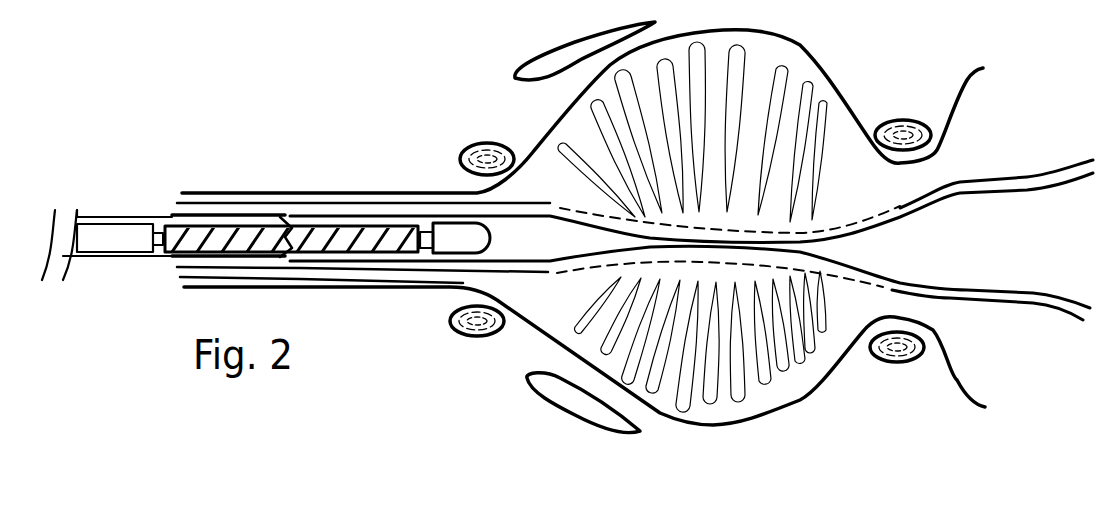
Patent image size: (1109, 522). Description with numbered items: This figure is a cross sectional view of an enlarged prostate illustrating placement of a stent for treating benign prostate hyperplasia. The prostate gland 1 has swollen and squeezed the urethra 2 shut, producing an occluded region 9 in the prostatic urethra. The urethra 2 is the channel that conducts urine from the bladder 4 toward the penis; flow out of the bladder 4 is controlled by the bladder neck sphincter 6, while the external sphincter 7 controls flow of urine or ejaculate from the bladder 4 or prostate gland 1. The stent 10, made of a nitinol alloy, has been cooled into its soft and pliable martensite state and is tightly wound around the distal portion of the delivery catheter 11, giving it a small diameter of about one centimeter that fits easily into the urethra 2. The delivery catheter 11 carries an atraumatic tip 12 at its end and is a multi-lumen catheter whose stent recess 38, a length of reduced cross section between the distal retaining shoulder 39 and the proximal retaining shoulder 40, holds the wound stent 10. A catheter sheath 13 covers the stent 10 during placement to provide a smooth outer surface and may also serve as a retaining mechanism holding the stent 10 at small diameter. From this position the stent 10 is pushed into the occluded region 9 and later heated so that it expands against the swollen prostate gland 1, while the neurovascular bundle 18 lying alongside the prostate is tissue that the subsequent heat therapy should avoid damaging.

The prostate gland 1 is at (831, 54).
The urethra 2 is at (518, 238).
The bladder 4 is at (992, 247).
The bladder neck sphincter 6 is at (913, 120).
The external sphincter 7 is at (485, 143).
The occluded region 9 is at (872, 253).
The stent 10 is at (345, 232).
The delivery catheter 11 is at (103, 223).
The atraumatic tip 12 is at (458, 238).
The catheter sheath 13 is at (143, 215).
The neurovascular bundle 18 is at (537, 52).
The stent recess 38 is at (420, 226).
The distal retaining shoulder 39 is at (423, 253).
The proximal retaining shoulder 40 is at (157, 255).